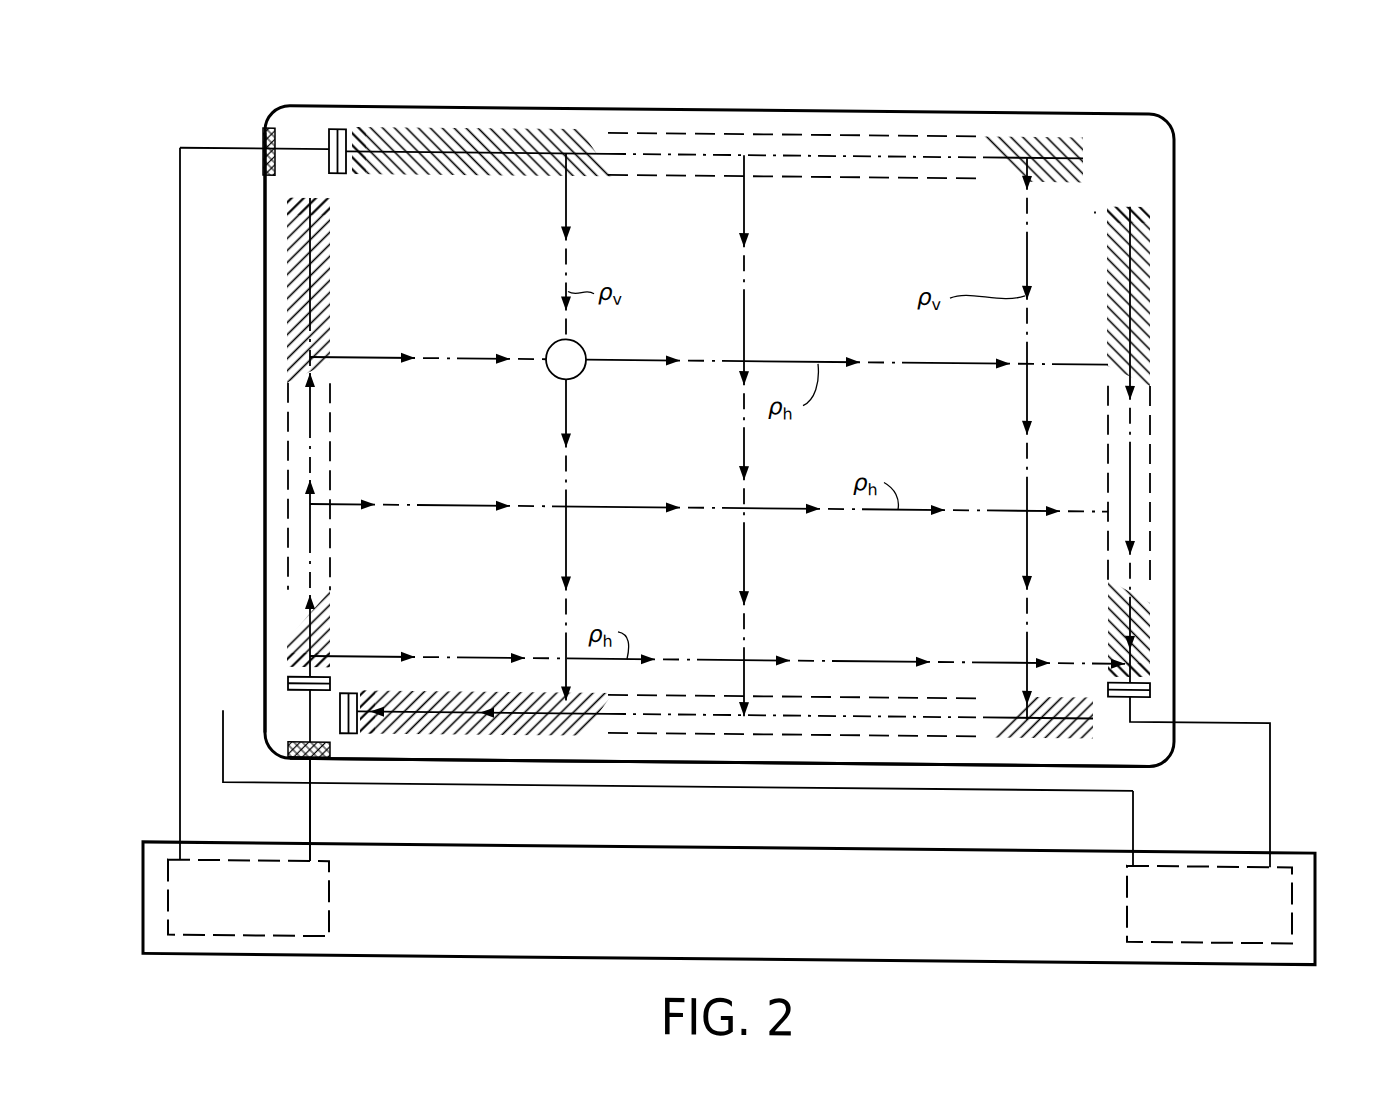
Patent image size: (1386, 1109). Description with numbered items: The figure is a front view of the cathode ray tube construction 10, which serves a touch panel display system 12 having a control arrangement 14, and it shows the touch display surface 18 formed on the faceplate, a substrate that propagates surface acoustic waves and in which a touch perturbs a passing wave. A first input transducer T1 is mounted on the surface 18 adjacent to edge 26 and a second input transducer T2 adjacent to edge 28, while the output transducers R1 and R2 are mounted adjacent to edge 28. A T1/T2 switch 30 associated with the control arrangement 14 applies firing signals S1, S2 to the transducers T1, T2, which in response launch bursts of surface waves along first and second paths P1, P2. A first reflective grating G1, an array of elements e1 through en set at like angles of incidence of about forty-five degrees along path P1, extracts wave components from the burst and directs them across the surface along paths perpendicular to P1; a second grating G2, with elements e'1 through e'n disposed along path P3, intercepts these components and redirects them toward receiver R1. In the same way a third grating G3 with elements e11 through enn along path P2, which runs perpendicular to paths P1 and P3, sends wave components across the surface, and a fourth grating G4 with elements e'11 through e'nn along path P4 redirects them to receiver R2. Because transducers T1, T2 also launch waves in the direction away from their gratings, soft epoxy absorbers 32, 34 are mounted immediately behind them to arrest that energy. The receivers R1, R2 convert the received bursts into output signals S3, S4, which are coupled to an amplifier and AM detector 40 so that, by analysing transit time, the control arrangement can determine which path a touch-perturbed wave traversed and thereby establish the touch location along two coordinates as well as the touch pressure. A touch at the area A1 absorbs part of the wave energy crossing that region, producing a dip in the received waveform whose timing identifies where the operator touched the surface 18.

The cathode ray tube construction 10 is at (1180, 428).
The touch panel display system 12 is at (168, 558).
The control arrangement 14 is at (988, 953).
The touch display surface 18 is at (1093, 202).
The edge 26 is at (265, 297).
The edge 28 is at (600, 757).
The T1/T2 switch 30 is at (168, 909).
The absorber 32 is at (263, 172).
The absorber 34 is at (288, 748).
The amplifier and AM detector 40 is at (1292, 902).
The first input surface wave transducer T1 is at (337, 126).
The second input surface wave transducer T2 is at (288, 680).
The first output surface wave transducer R1 is at (350, 731).
The second output surface wave transducer R2 is at (1150, 678).
The first reflective grating G1 is at (530, 165).
The second reflective grating G2 is at (495, 731).
The third reflective grating G3 is at (332, 616).
The fourth reflective grating G4 is at (1108, 615).
The first path P1 is at (893, 150).
The second path P2 is at (312, 280).
The third path P3 is at (785, 708).
The fourth path P4 is at (1150, 292).
The touch area A1 is at (580, 369).
The firing signal S1 is at (180, 798).
The firing signal S2 is at (310, 825).
The output signal S3 is at (1133, 816).
The output signal S4 is at (1270, 778).
The reflective element e1 is at (357, 124).
The reflective element en is at (1060, 127).
The reflective element enn is at (332, 198).
The reflective element e'nn is at (1171, 221).
The reflective element e11 is at (331, 662).
The reflective element e'11 is at (1178, 648).
The reflective element e'1 is at (407, 758).
The reflective element e'n is at (1056, 731).